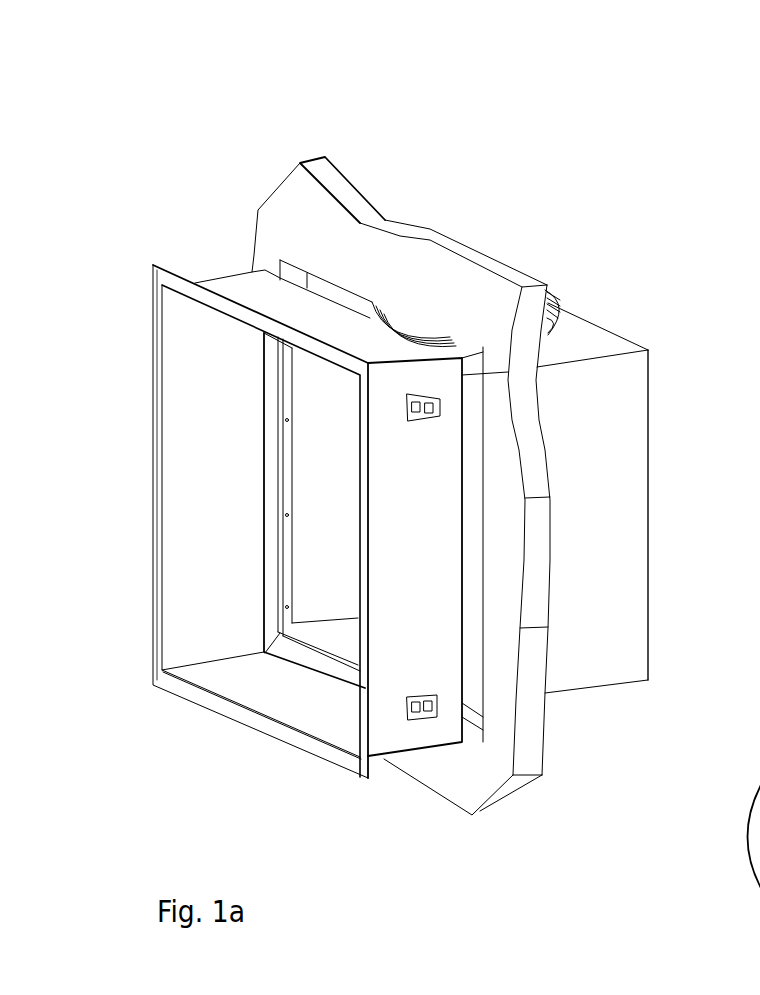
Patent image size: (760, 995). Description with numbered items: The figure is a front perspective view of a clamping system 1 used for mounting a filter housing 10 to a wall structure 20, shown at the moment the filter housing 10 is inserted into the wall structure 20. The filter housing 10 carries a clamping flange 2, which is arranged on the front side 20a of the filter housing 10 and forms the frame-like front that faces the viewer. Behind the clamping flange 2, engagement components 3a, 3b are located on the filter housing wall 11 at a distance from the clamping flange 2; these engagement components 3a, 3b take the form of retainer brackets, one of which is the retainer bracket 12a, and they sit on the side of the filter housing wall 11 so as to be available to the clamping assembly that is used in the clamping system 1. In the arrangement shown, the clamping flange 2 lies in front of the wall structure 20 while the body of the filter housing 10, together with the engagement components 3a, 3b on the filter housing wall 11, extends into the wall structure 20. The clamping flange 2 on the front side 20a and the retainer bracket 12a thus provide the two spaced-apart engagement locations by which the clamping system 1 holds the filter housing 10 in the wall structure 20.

The clamping system 1 is at (167, 138).
The clamping flange 2 is at (362, 688).
The engagement component 3a is at (428, 405).
The engagement component 3b is at (421, 714).
The filter housing 10 is at (628, 390).
The filter housing wall 11 is at (400, 553).
The retainer bracket 12a is at (432, 404).
The wall structure 20 is at (458, 240).
The front side 20a is at (493, 770).